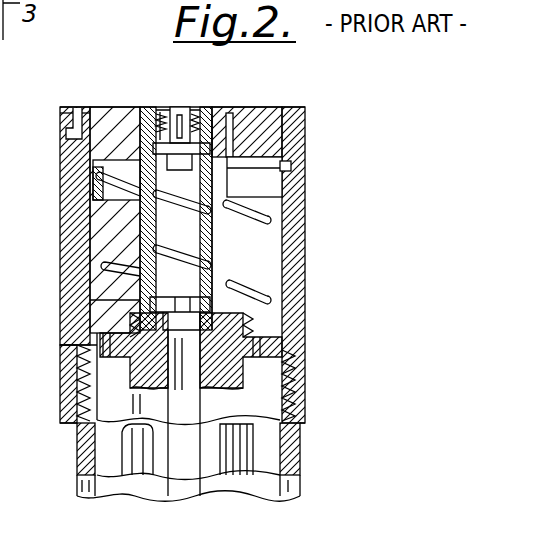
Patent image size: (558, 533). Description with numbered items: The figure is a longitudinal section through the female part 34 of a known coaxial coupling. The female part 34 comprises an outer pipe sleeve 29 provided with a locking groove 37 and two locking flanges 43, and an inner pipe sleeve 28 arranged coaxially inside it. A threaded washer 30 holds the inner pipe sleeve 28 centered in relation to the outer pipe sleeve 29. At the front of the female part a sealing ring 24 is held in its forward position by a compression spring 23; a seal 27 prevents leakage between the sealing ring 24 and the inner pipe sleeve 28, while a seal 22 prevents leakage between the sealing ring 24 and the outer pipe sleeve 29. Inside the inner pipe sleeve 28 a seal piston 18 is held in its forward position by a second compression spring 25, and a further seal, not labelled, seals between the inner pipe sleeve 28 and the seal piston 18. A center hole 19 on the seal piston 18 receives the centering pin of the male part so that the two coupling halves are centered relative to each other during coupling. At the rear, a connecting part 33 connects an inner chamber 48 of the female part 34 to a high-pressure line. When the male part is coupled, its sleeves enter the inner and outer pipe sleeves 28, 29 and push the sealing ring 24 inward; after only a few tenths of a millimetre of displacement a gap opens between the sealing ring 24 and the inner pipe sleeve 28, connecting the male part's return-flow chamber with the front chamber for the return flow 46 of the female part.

The seal piston 18 is at (198, 118).
The center hole 19 is at (180, 111).
The seal 22 is at (298, 163).
The compression spring 23 is at (297, 291).
The sealing ring 24 is at (290, 109).
The compression spring 25 is at (167, 227).
The seal 27 is at (240, 114).
The inner pipe sleeve 28 is at (232, 207).
The outer pipe sleeve 29 is at (297, 279).
The threaded washer 30 is at (300, 346).
The connecting part 33 is at (140, 452).
The female part 34 is at (327, 241).
The locking groove 37 is at (305, 131).
The locking flanges 43 is at (74, 124).
The front chamber for the return flow 46 is at (107, 302).
The inner chamber 48 is at (90, 264).